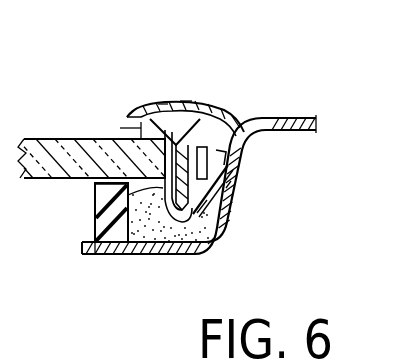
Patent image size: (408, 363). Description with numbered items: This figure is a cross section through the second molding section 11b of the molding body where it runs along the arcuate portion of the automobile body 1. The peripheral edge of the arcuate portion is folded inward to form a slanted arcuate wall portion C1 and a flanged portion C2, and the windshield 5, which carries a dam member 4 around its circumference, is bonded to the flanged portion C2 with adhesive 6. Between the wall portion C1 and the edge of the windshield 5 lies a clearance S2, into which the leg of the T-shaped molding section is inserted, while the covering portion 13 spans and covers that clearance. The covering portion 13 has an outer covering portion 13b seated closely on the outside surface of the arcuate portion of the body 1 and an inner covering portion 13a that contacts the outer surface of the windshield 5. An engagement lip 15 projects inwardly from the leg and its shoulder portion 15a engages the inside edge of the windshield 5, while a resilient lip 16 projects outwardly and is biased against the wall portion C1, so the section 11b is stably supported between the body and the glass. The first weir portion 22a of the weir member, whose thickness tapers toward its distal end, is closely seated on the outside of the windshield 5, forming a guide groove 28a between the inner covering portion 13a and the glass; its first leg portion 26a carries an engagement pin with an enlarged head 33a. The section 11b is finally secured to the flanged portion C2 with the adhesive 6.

The automobile body 1 is at (302, 114).
The dam member 4 is at (118, 256).
The windshield 5 is at (80, 140).
The adhesive 6 is at (163, 240).
The engagement lip 15 is at (96, 211).
The shoulder portion 15a is at (96, 184).
The covering portion 13 is at (207, 102).
The inner covering portion 13a is at (144, 109).
The outer covering portion 13b is at (240, 110).
The resilient lip 16 is at (215, 205).
The enlarged head 33a is at (215, 170).
The first leg portion 26a is at (205, 143).
The slanted arcuate wall portion C1 is at (224, 186).
The flanged portion C2 is at (98, 256).
The clearance S2 is at (216, 250).
The first weir portion 22a is at (163, 102).
The second molding section 11b is at (186, 100).
The guide groove 28a is at (138, 128).